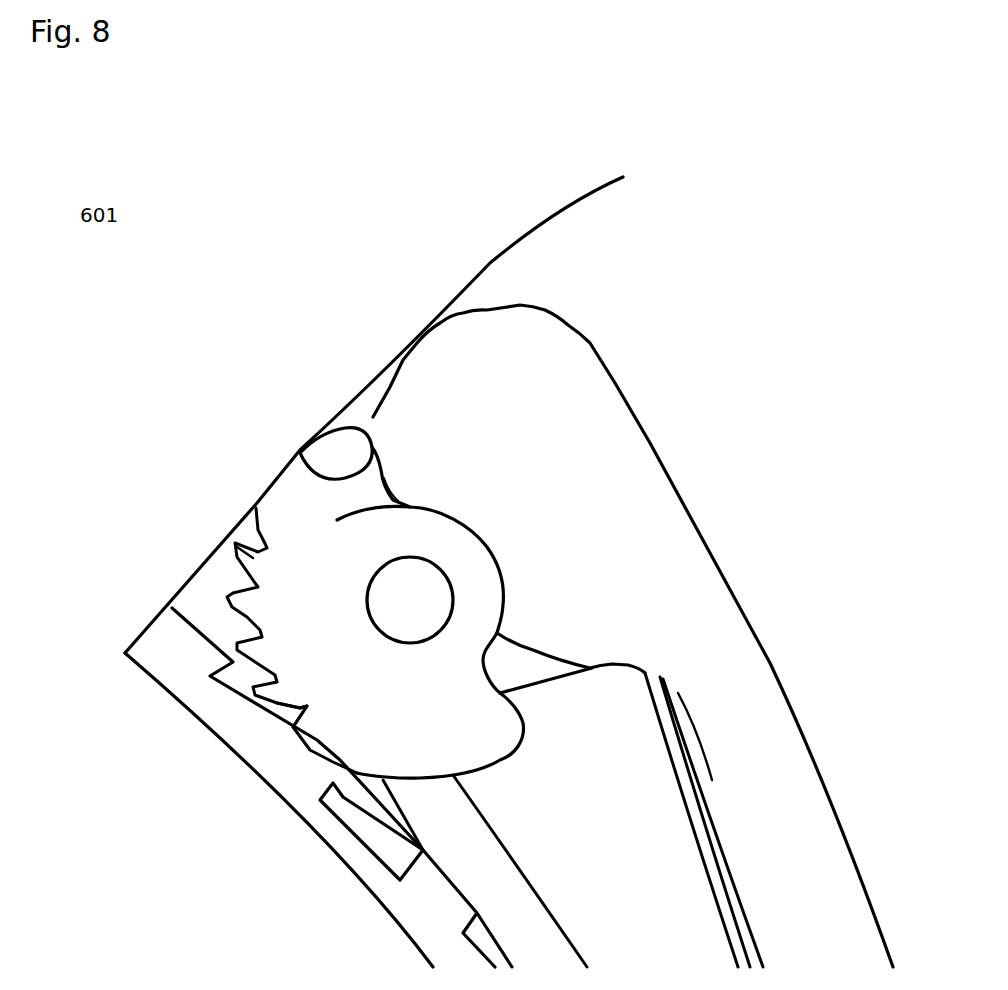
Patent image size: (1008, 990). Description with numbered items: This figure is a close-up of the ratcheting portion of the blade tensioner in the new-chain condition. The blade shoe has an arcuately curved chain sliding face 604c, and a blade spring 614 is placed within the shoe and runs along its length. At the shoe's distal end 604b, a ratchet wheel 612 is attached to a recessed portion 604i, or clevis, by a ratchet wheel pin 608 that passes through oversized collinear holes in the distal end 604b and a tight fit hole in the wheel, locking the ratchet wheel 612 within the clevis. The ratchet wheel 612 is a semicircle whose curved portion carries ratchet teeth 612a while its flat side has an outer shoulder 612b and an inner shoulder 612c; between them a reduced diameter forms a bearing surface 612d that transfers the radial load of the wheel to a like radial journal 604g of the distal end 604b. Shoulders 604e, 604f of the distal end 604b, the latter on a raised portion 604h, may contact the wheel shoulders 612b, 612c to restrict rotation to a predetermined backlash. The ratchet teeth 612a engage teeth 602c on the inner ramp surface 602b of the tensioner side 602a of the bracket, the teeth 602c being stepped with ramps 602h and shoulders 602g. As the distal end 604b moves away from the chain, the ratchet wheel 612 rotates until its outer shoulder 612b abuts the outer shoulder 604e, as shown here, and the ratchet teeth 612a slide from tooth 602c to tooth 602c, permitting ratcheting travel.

The tensioner side of the bracket 602a is at (602, 230).
The inner ramp surface 602b is at (173, 663).
The teeth 602c is at (340, 847).
The shoulders 602g is at (410, 865).
The ramps 602h is at (290, 745).
The distal end 604b is at (500, 303).
The arcuately curved chain sliding face 604c is at (795, 720).
The outer shoulder of the distal end 604e is at (385, 473).
The inner shoulder of the distal end 604f is at (533, 647).
The radial journal 604g is at (497, 553).
The raised portion 604h is at (613, 473).
The recessed portion 604i is at (527, 663).
The ratchet wheel pin 608 is at (410, 600).
The ratchet wheel 612 is at (449, 736).
The ratchet teeth 612a is at (242, 545).
The outer shoulder of the ratchet wheel 612b is at (298, 452).
The inner shoulder of the ratchet wheel 612c is at (513, 707).
The bearing surface 612d is at (447, 510).
The blade spring 614 is at (725, 840).